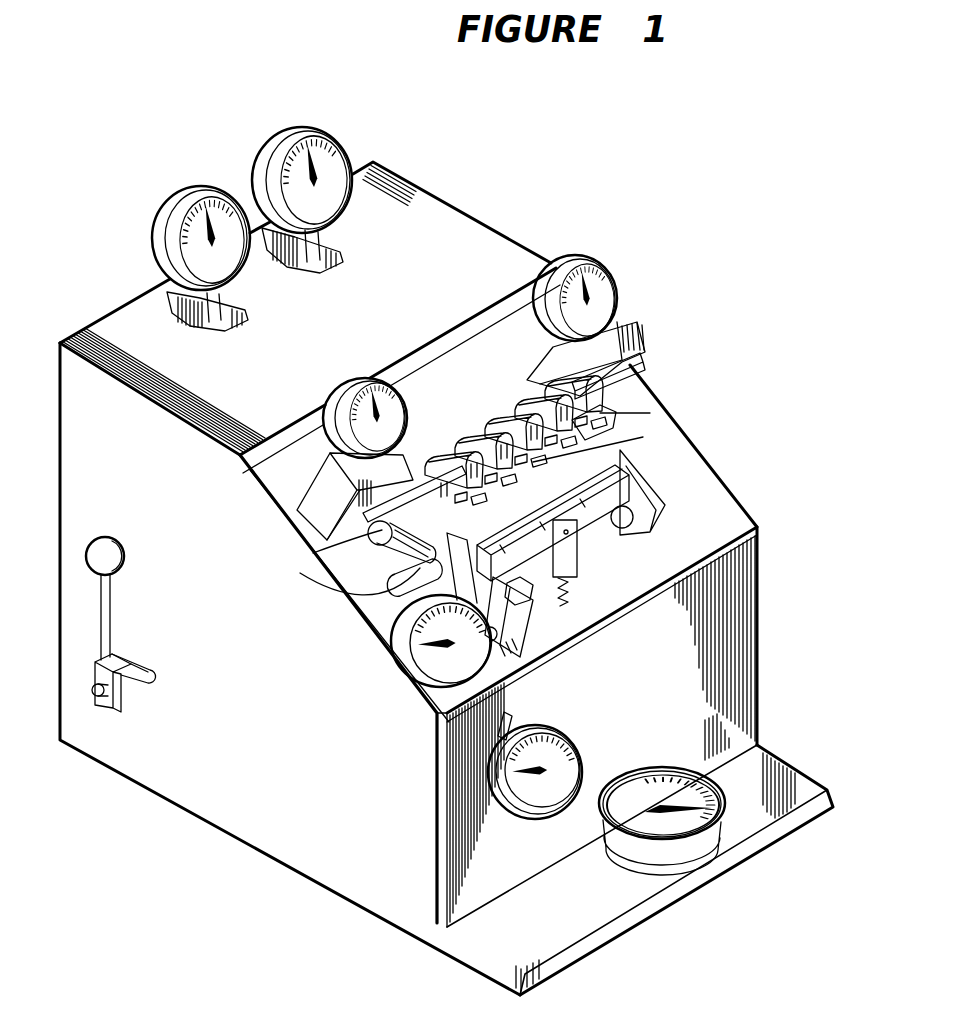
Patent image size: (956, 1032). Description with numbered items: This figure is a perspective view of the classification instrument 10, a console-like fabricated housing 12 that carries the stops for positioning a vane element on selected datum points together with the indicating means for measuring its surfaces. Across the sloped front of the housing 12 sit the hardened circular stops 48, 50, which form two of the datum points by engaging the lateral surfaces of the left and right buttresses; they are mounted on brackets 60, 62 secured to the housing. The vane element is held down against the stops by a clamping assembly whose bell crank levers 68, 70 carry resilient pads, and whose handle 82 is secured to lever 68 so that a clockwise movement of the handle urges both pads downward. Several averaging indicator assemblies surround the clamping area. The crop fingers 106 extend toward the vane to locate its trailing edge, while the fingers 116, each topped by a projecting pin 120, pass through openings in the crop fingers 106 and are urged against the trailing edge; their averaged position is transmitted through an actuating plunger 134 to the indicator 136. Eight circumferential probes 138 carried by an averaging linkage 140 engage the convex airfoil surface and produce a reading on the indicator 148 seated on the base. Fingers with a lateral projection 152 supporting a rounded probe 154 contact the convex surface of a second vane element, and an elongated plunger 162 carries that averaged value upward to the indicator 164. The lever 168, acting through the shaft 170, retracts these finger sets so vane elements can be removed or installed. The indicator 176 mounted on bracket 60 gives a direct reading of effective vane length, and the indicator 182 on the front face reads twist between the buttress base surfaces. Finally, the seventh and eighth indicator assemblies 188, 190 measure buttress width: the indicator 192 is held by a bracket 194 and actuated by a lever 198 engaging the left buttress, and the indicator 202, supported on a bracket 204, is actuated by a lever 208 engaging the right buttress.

The classification instrument 10 is at (446, 577).
The housing 12 is at (473, 245).
The circular stop 48 is at (520, 592).
The circular stop 50 is at (617, 528).
The bracket 60 is at (533, 647).
The bracket 62 is at (650, 495).
The bell crank lever 68 is at (386, 613).
The bell crank lever 70 is at (650, 413).
The handle 82 is at (340, 573).
The crop fingers 106 is at (643, 437).
The fingers 116 is at (388, 582).
The pin 120 is at (485, 449).
The actuating plunger 134 is at (237, 320).
The indicator 136 is at (165, 208).
The circumferential probes 138 is at (625, 470).
The averaging linkage 140 is at (585, 560).
The indicator 148 is at (687, 857).
The lateral projection 152 is at (441, 464).
The rounded probe 154 is at (478, 424).
The elongated plunger 162 is at (342, 247).
The indicator 164 is at (268, 147).
The lever 168 is at (110, 605).
The shaft 170 is at (93, 706).
The indicator 176 is at (410, 665).
The indicator 182 is at (570, 738).
The seventh indicator assembly 188 is at (339, 442).
The eighth indicator assembly 190 is at (626, 312).
The indicator 192 is at (358, 383).
The bracket 194 is at (318, 515).
The lever 198 is at (313, 555).
The indicator 202 is at (603, 266).
The bracket 204 is at (645, 337).
The lever 208 is at (636, 372).